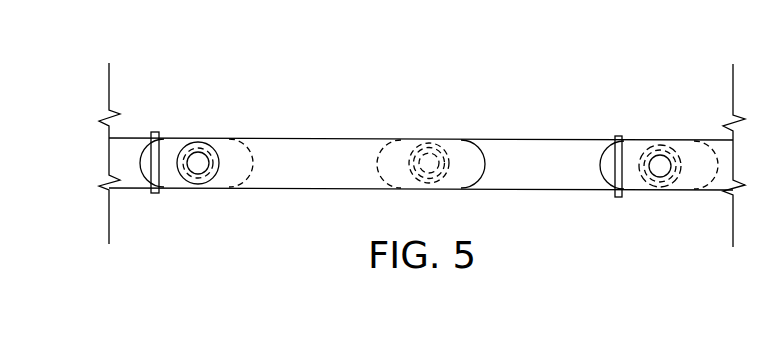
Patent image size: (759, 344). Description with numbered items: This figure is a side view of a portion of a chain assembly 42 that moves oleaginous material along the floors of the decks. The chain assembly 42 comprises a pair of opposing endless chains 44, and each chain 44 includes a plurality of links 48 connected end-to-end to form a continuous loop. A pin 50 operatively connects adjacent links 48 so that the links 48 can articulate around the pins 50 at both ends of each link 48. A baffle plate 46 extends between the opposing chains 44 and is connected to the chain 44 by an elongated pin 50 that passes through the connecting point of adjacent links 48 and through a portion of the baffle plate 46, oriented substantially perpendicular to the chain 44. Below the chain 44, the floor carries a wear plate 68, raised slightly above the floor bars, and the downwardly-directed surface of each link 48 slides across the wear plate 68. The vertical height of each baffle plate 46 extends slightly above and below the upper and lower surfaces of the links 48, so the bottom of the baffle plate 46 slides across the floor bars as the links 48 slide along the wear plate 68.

The chain assembly 42 is at (405, 117).
The chain 44 is at (508, 150).
The baffle plate 46 is at (153, 153).
The link 48 is at (312, 163).
The pin 50 is at (198, 163).
The wear plate 68 is at (718, 192).